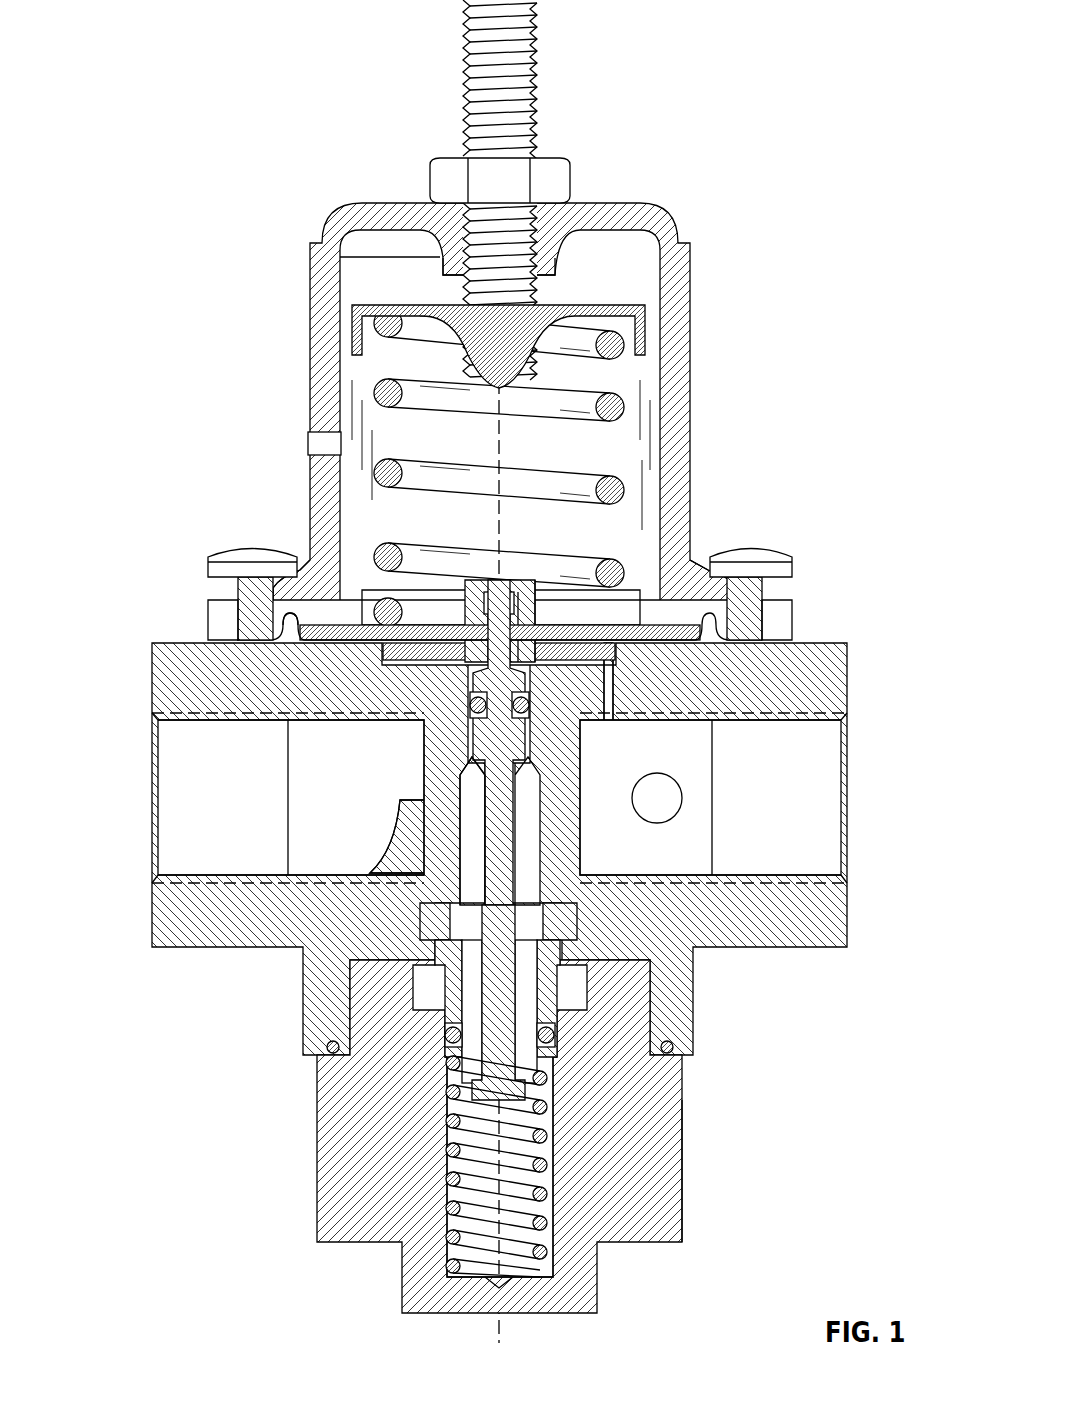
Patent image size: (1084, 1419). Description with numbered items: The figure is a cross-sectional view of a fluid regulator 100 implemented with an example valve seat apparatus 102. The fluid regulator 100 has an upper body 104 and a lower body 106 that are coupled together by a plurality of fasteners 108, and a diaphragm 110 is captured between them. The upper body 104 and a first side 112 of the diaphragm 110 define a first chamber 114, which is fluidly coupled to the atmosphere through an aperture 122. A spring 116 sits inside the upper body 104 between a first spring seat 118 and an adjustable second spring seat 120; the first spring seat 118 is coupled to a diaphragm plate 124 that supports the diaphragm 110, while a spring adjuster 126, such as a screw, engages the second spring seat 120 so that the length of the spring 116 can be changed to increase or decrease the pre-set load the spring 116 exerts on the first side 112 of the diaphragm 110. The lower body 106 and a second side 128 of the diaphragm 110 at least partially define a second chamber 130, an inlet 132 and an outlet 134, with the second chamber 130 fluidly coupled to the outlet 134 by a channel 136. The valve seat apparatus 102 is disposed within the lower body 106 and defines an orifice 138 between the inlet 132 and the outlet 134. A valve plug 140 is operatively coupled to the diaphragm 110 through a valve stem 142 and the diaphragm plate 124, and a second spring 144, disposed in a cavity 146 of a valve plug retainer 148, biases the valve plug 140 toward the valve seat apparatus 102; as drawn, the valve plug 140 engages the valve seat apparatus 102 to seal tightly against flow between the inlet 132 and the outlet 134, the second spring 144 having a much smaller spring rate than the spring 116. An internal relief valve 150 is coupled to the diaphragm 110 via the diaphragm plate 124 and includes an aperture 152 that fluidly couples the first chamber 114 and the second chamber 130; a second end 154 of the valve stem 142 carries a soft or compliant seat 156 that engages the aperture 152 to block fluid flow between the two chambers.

The fluid regulator 100 is at (222, 36).
The valve seat apparatus 102 is at (568, 890).
The upper body 104 is at (700, 318).
The lower body 106 is at (690, 1014).
The fasteners 108 is at (255, 548).
The diaphragm 110 is at (268, 582).
The first side of the diaphragm 112 is at (732, 598).
The first chamber 114 is at (413, 291).
The spring 116 is at (665, 400).
The first spring seat 118 is at (290, 590).
The second spring seat 120 is at (342, 323).
The aperture 122 is at (318, 445).
The diaphragm plate 124 is at (710, 660).
The spring adjuster 126 is at (464, 88).
The second side of the diaphragm 128 is at (290, 652).
The second chamber 130 is at (290, 630).
The inlet 132 is at (152, 832).
The outlet 134 is at (850, 785).
The channel 136 is at (608, 700).
The orifice 138 is at (472, 887).
The valve plug 140 is at (453, 1013).
The valve stem 142 is at (470, 775).
The second spring 144 is at (552, 1165).
The cavity 146 is at (447, 1172).
The valve plug retainer 148 is at (688, 1208).
The internal relief valve 150 is at (475, 590).
The aperture of the relief valve 152 is at (502, 594).
The second end of the valve stem 154 is at (490, 778).
The soft or compliant seat 156 is at (528, 600).